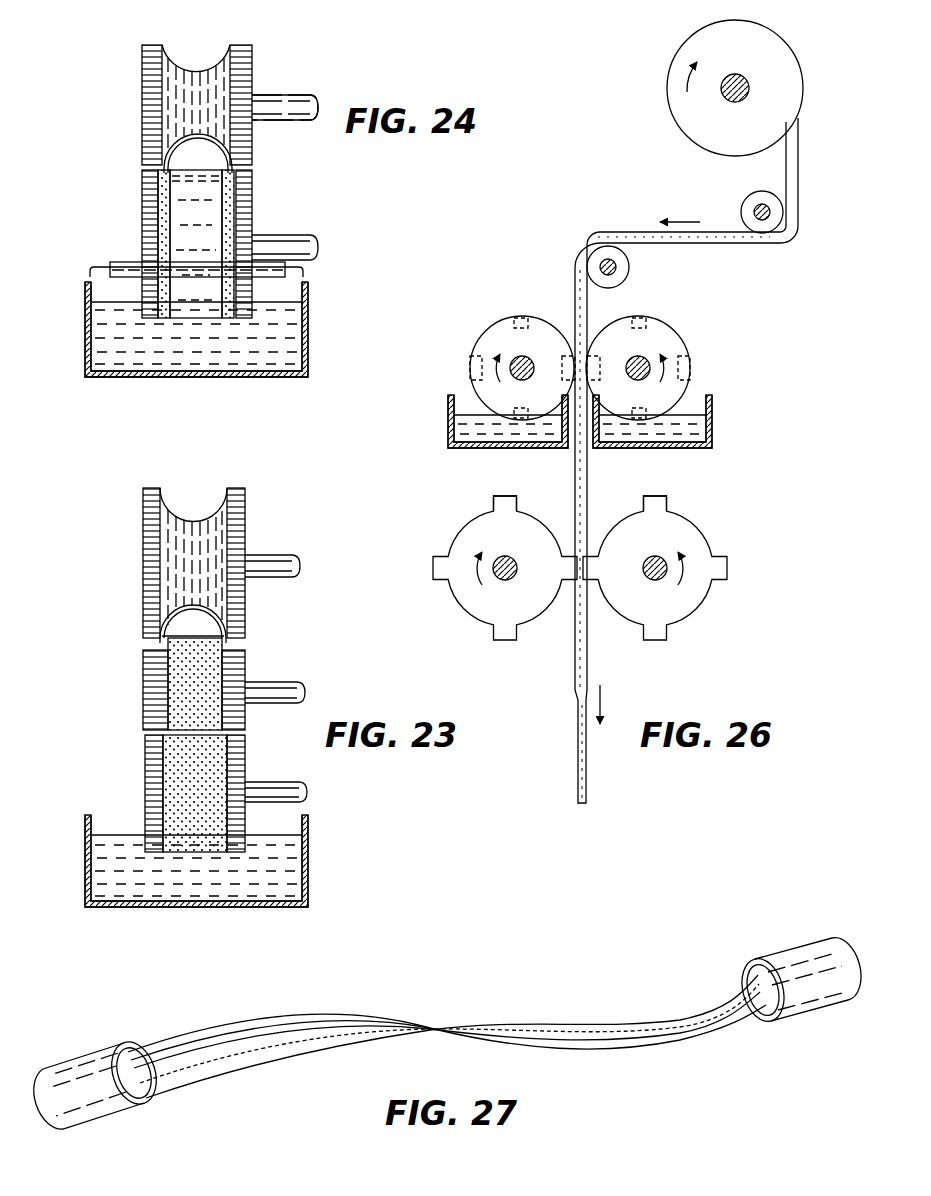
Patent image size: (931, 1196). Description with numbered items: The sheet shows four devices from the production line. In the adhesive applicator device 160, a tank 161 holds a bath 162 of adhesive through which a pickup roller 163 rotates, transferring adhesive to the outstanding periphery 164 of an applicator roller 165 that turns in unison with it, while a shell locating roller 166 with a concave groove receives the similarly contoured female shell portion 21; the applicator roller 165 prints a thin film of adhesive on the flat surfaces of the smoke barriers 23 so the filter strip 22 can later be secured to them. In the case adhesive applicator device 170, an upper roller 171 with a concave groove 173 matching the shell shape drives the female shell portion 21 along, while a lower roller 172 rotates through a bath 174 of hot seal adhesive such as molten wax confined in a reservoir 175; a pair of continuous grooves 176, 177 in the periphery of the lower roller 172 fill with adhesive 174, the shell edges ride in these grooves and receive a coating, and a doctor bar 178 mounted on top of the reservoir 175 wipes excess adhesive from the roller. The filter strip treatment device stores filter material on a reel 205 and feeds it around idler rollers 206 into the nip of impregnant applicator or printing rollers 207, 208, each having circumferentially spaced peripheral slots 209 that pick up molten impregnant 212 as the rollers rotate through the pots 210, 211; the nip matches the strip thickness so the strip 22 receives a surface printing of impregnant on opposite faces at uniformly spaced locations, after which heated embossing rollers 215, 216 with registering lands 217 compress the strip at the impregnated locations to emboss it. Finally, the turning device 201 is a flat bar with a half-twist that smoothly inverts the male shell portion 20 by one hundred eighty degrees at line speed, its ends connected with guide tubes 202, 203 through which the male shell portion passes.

In FIG. 27, the male shell portion 20 is at (222, 1041).
In FIG. 24, the female shell portion 21 is at (222, 141).
In FIG. 23, the female shell portion 21 is at (221, 609).
In FIG. 26, the filter strip 22 is at (733, 244).
In FIG. 23, the smoke barrier 23 is at (157, 629).
In FIG. 23, the adhesive applicator device 160 is at (95, 594).
In FIG. 23, the tank 161 is at (308, 871).
In FIG. 23, the bath of adhesive 162 is at (148, 882).
In FIG. 23, the pickup roller 163 is at (247, 761).
In FIG. 23, the outstanding periphery 164 is at (228, 650).
In FIG. 23, the applicator roller 165 is at (146, 686).
In FIG. 23, the shell locating roller 166 is at (245, 506).
In FIG. 24, the case adhesive applicator device 170 is at (124, 78).
In FIG. 24, the upper roller 171 is at (253, 72).
In FIG. 24, the lower roller 172 is at (252, 221).
In FIG. 24, the concave groove 173 is at (174, 77).
In FIG. 24, the bath of hot seal adhesive 174 is at (278, 304).
In FIG. 24, the reservoir 175 is at (309, 338).
In FIG. 24, the continuous groove 176 is at (231, 190).
In FIG. 24, the continuous groove 177 is at (161, 191).
In FIG. 24, the doctor bar 178 is at (123, 267).
In FIG. 27, the turning device 201 is at (358, 1013).
In FIG. 27, the guide tube 202 is at (800, 950).
In FIG. 27, the guide tube 203 is at (94, 1112).
In FIG. 26, the reel 205 is at (667, 76).
In FIG. 26, the idler roller 206 is at (756, 195).
In FIG. 26, the impregnant applicator roller 207 is at (670, 332).
In FIG. 26, the impregnant applicator roller 208 is at (510, 318).
In FIG. 26, the peripheral slot 209 is at (470, 357).
In FIG. 26, the pot 210 is at (713, 425).
In FIG. 26, the pot 211 is at (452, 424).
In FIG. 26, the impregnant 212 is at (472, 433).
In FIG. 26, the heated embossing roller 215 is at (708, 539).
In FIG. 26, the heated embossing roller 216 is at (463, 533).
In FIG. 26, the land 217 is at (516, 495).